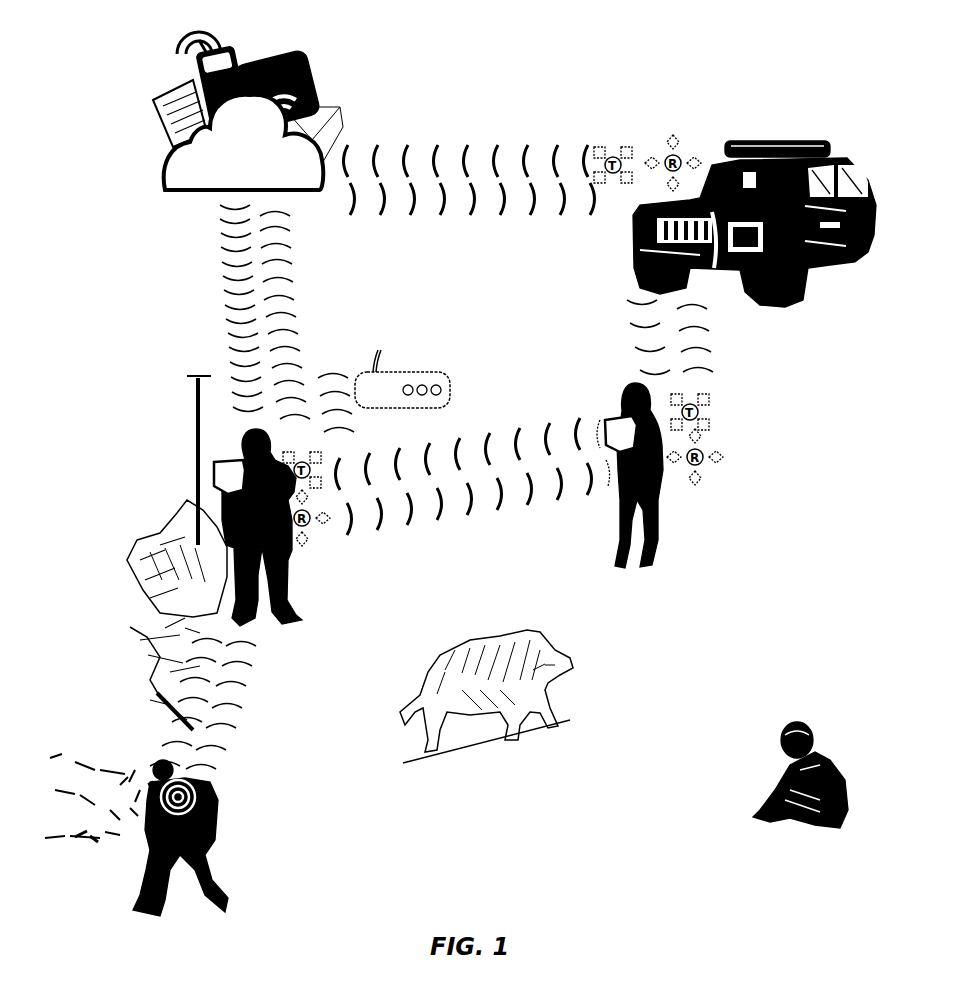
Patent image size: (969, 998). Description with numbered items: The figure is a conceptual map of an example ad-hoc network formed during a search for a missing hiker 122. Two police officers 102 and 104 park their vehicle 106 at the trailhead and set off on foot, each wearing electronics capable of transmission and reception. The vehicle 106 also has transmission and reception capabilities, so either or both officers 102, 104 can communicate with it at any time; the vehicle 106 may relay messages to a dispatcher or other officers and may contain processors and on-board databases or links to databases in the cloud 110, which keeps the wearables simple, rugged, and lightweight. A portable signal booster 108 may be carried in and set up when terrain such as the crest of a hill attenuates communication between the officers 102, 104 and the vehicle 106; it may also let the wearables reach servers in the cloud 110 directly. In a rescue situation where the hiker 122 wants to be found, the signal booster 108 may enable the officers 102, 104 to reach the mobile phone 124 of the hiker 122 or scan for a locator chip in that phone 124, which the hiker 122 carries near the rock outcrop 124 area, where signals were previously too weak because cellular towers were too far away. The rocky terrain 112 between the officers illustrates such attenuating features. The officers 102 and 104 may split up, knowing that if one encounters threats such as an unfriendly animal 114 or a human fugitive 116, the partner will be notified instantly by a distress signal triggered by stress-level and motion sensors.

The police officer 102 is at (655, 527).
The police officer 104 is at (300, 598).
The vehicle 106 is at (803, 296).
The portable signal booster 108 is at (452, 385).
The cloud 110 is at (315, 75).
The rocks / terrain with pole 112 is at (147, 540).
The unfriendly animal 114 is at (500, 632).
The human fugitive 116 is at (772, 749).
The missing hiker 122 is at (218, 812).
The mobile phone 124 is at (151, 758).